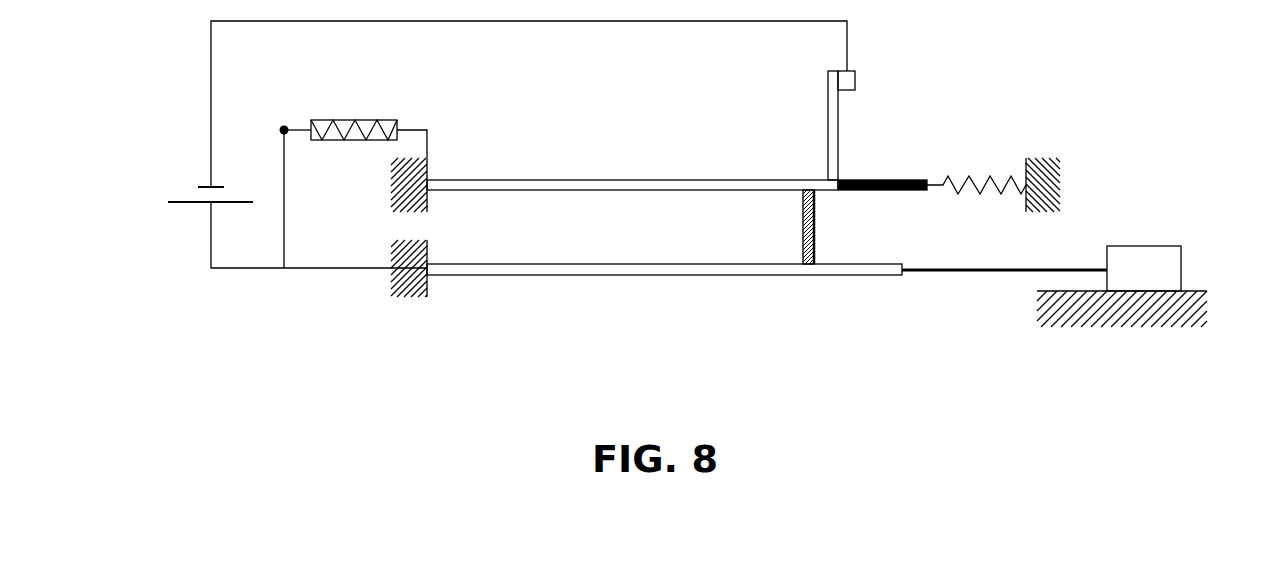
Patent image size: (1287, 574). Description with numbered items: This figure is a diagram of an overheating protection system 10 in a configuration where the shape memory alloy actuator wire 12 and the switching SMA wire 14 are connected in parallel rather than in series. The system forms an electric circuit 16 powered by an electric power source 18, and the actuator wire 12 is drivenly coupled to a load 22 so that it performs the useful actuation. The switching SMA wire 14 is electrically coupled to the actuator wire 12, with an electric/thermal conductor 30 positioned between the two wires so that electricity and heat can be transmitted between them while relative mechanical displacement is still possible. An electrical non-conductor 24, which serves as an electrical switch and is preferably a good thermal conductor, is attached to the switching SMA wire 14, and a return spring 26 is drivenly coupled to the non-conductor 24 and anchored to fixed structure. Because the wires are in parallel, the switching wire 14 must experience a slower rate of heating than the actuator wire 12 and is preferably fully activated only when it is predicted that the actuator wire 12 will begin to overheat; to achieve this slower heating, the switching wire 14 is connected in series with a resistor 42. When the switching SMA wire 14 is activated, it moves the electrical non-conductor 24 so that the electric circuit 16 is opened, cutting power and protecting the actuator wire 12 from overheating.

The overheating protection system 10 is at (1128, 92).
The shape memory alloy actuator wire 12 is at (498, 275).
The switching SMA wire 14 is at (540, 180).
The circuit 16 is at (529, 22).
The electric power source 18 is at (178, 204).
The load 22 is at (1183, 270).
The electrical non-conductor 24 is at (915, 180).
The return spring 26 is at (998, 175).
The electric/thermal conductor 30 is at (803, 229).
The resistor 42 is at (362, 121).